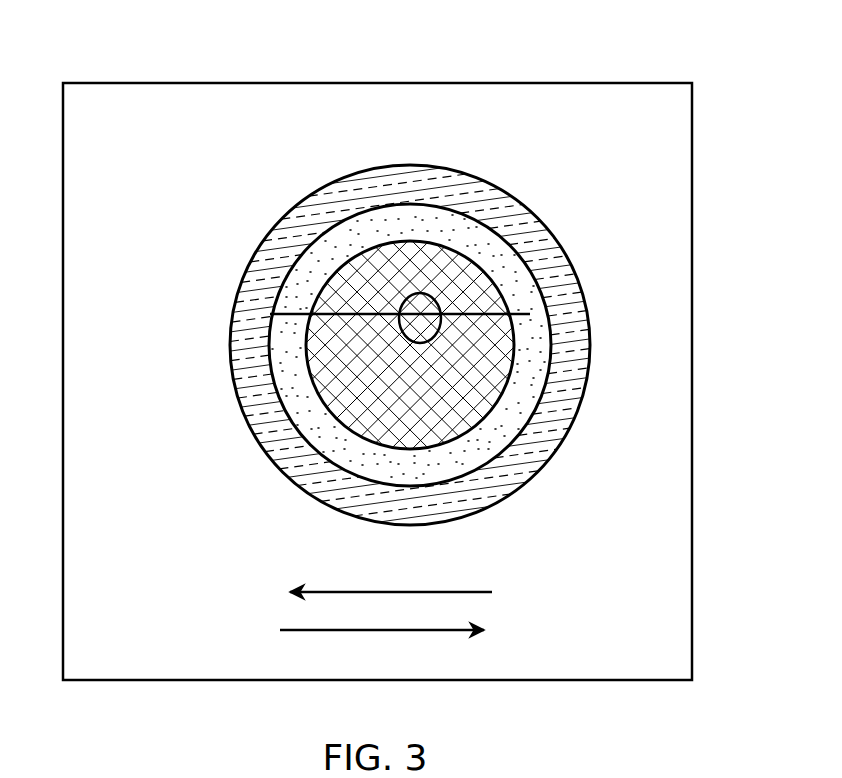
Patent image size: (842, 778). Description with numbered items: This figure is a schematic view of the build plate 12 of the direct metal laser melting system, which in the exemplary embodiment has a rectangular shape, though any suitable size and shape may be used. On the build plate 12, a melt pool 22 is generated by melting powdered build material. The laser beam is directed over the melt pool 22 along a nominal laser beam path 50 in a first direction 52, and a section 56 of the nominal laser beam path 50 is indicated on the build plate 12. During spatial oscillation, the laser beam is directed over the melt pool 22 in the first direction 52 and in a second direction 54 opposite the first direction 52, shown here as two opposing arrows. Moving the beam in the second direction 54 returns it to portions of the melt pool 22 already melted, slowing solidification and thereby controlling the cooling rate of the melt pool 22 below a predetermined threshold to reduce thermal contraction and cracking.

The build plate 12 is at (558, 57).
The melt pool 22 is at (246, 208).
The nominal laser beam path 50 is at (516, 307).
The first direction 52 is at (431, 633).
The second direction 54 is at (305, 590).
The section of nominal laser beam path 56 is at (455, 250).